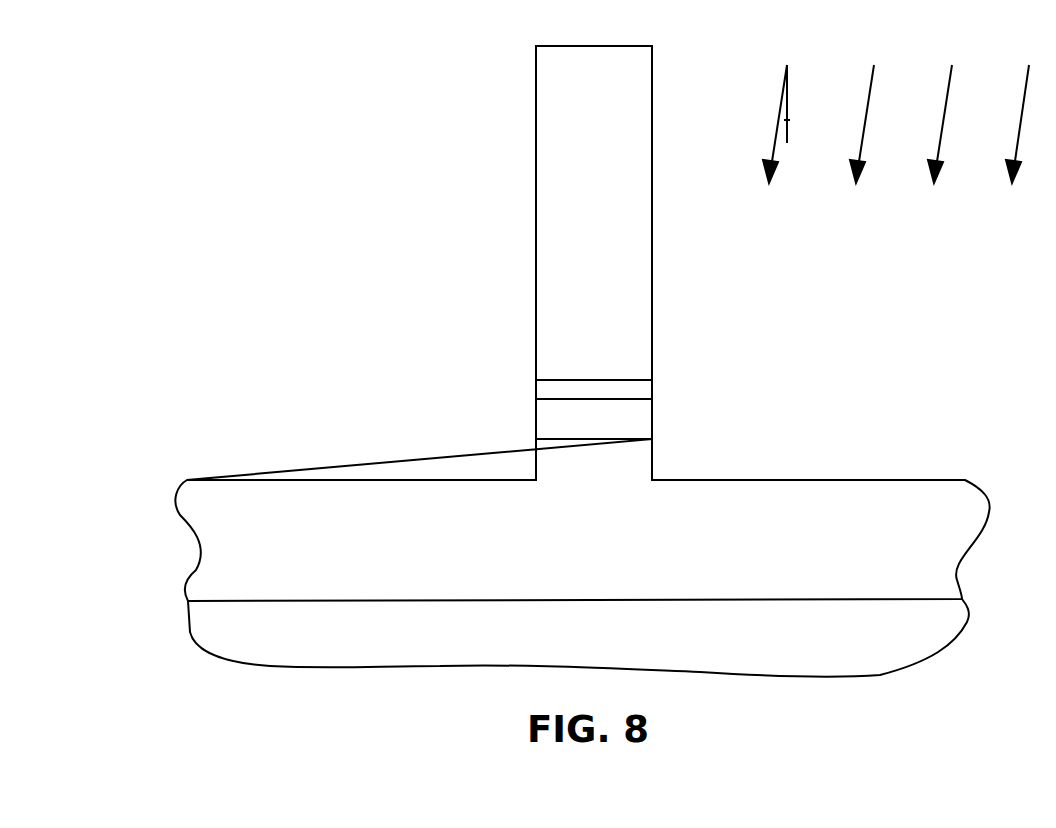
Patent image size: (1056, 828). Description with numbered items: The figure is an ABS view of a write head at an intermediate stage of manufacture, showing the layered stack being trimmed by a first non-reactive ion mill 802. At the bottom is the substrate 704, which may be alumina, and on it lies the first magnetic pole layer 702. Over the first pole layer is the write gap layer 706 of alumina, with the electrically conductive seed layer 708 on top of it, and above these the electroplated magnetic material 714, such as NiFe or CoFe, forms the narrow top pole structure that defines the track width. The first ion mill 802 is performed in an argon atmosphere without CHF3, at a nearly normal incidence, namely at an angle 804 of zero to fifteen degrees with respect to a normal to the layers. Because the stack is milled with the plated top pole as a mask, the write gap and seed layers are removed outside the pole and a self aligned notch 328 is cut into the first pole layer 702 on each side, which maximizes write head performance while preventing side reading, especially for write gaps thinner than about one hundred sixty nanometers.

The first magnetic pole layer 702 is at (672, 537).
The substrate 704 is at (673, 637).
The write gap layer 706 is at (633, 417).
The seed layer 708 is at (630, 392).
The magnetic material 714 is at (633, 222).
The notch 328 is at (535, 479).
The first non-reactive ion mill 802 is at (950, 70).
The angle 804 is at (787, 112).